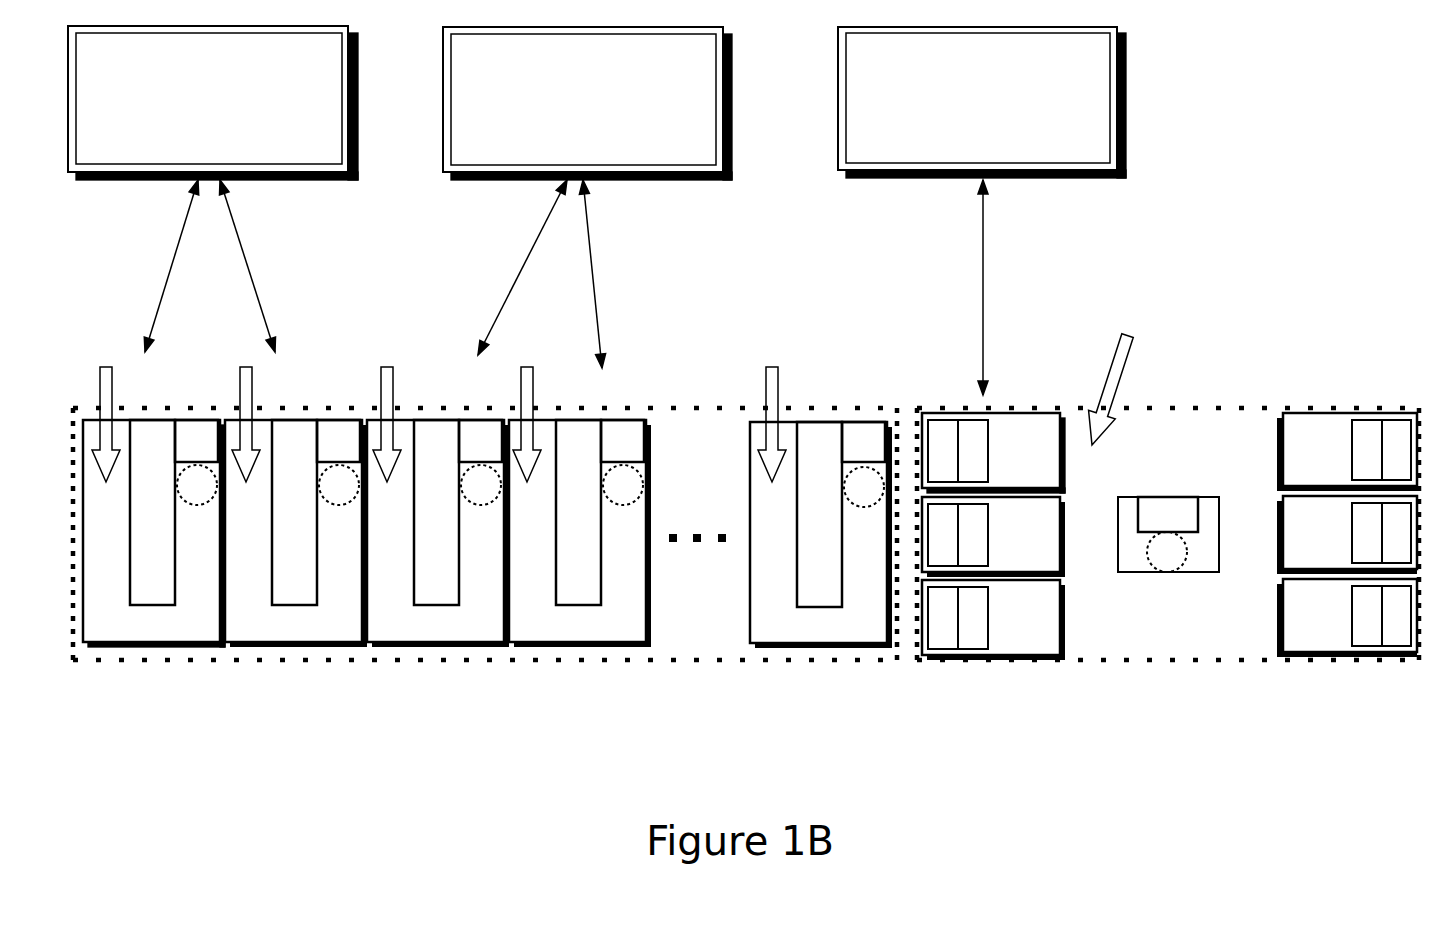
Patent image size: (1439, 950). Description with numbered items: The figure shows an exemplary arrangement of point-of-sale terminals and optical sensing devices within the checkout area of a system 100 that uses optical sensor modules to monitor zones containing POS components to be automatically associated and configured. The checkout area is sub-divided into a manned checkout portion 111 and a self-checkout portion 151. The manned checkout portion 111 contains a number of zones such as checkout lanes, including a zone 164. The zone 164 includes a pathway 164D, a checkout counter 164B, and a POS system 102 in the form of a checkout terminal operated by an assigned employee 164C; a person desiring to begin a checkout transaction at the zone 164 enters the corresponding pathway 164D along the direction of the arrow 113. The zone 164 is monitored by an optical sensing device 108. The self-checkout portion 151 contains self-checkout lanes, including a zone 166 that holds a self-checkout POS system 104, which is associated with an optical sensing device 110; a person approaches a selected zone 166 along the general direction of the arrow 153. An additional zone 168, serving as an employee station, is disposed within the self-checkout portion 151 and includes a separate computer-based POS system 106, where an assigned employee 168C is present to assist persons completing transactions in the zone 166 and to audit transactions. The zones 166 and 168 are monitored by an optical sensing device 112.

The system 100 is at (1355, 253).
The POS system 102 is at (193, 406).
The POS system 104 is at (935, 408).
The POS system 106 is at (1175, 496).
The optical sensing device 108 is at (196, 131).
The optical sensing device 110 is at (568, 129).
The manned checkout portion 111 is at (98, 662).
The optical sensing device 112 is at (964, 124).
The arrow 113 is at (99, 370).
The self-checkout portion 151 is at (953, 662).
The arrow 153 is at (1118, 346).
The zone 164 is at (154, 481).
The checkout counter 164B is at (130, 528).
The assigned employee 164C is at (197, 490).
The pathway 164D is at (100, 597).
The zone 166 is at (1066, 462).
The zone 168 is at (1142, 516).
The assigned employee 168C is at (1150, 555).